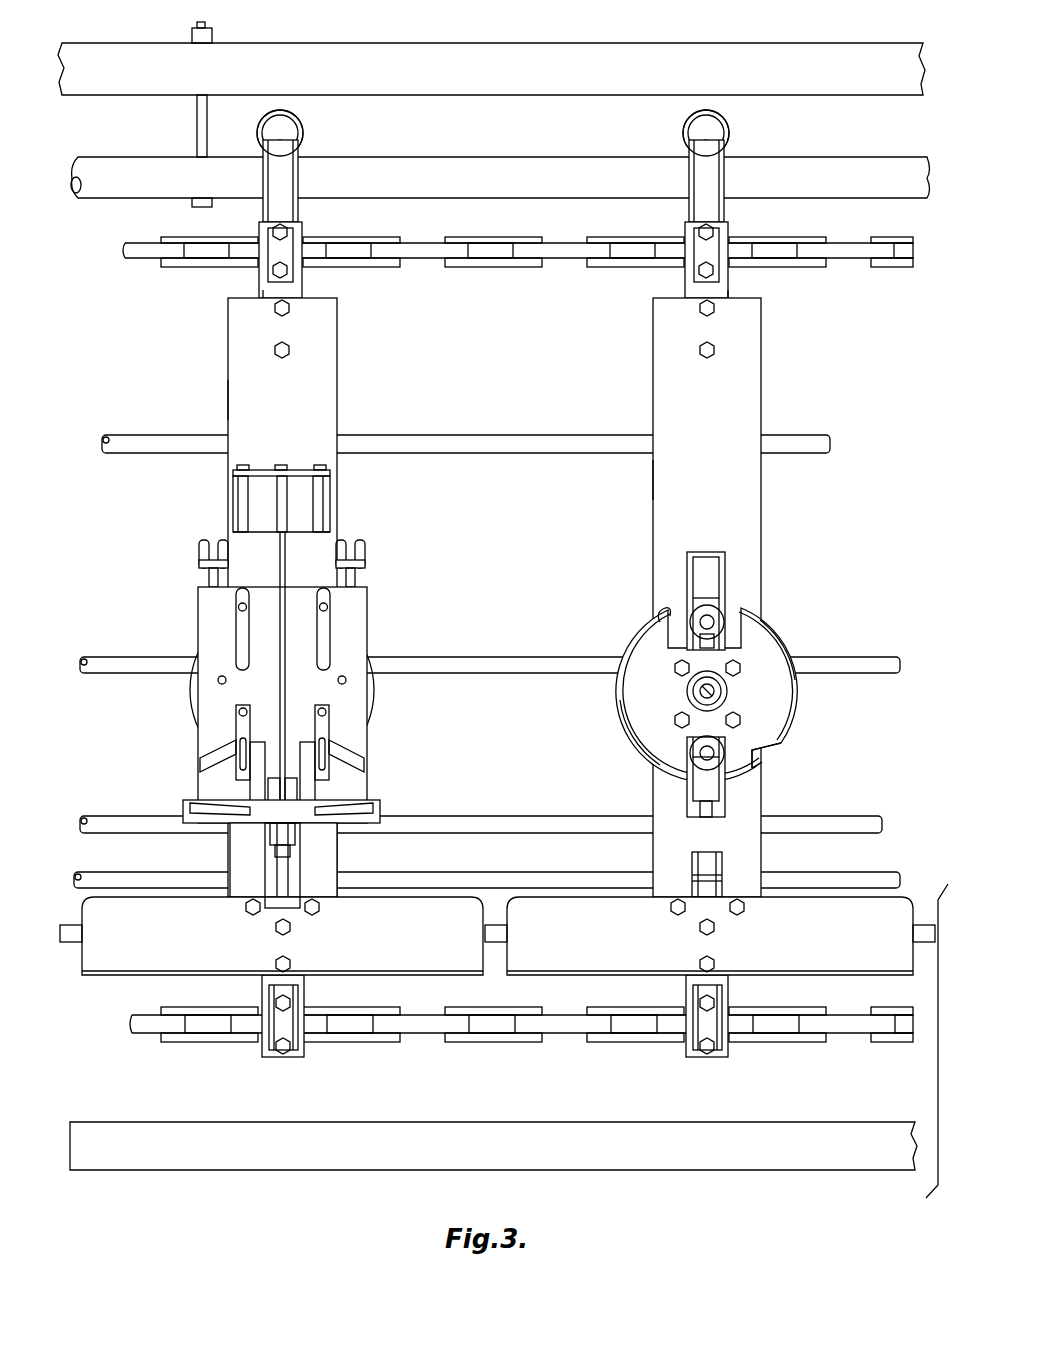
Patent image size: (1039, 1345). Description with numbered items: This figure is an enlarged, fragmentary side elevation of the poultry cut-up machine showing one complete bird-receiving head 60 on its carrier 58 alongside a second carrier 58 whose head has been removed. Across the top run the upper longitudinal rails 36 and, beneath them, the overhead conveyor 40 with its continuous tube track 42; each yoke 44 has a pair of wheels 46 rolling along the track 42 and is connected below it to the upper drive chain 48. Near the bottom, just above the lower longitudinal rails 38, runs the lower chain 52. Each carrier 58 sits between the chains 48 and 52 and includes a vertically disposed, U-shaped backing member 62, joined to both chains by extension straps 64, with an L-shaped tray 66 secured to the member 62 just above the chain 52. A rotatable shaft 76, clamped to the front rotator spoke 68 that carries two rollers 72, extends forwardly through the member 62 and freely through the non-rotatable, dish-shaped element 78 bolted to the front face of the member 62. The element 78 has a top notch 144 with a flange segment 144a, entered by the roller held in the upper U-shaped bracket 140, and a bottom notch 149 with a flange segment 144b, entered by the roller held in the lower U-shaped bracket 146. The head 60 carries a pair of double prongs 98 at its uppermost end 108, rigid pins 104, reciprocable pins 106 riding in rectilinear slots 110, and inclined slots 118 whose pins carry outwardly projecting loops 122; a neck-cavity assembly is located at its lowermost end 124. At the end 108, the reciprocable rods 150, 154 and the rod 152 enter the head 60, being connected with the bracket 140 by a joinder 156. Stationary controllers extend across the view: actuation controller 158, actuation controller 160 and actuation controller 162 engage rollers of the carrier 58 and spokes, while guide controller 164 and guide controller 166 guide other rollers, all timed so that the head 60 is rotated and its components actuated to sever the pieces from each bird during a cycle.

The upper longitudinal rail 36 is at (598, 50).
The lower longitudinal rail 38 is at (655, 1170).
The overhead conveyor 40 is at (830, 148).
The tube track 42 is at (493, 162).
The yoke 44 is at (272, 176).
The wheel 46 is at (300, 127).
The upper drive chain 48 is at (560, 264).
The lower chain 52 is at (414, 1040).
The carrier 58 is at (340, 390).
The bird-receiving head 60 is at (370, 628).
The backing member 62 is at (232, 400).
The extension strap 64 is at (262, 291).
The tray 66 is at (128, 978).
The front rotator spoke 68 is at (716, 635).
The roller 72 is at (716, 620).
The rotatable shaft 76 is at (700, 692).
The dish-shaped element 78 is at (372, 700).
The double prongs 98 is at (197, 552).
The rigid pin 104 is at (218, 680).
The reciprocable pin 106 is at (318, 607).
The uppermost end 108 is at (305, 530).
The rectilinear slot 110 is at (320, 626).
The inclined slot 118 is at (208, 755).
The loop 122 is at (204, 770).
The lowermost end 124 is at (210, 825).
The upper U-shaped bracket 140 is at (688, 566).
The top notch 144 is at (660, 620).
The flange segment 144a is at (790, 660).
The flange segment 144b is at (625, 732).
The lower U-shaped bracket 146 is at (688, 792).
The bottom notch 149 is at (768, 762).
The reciprocable rod 150 is at (237, 484).
The rod 152 is at (268, 476).
The reciprocable rod 154 is at (330, 484).
The joinder 156 is at (297, 470).
The actuation controller 158 is at (522, 436).
The actuation controller 160 is at (518, 660).
The actuation controller 162 is at (514, 817).
The guide controller 164 is at (497, 874).
The guide controller 166 is at (505, 938).